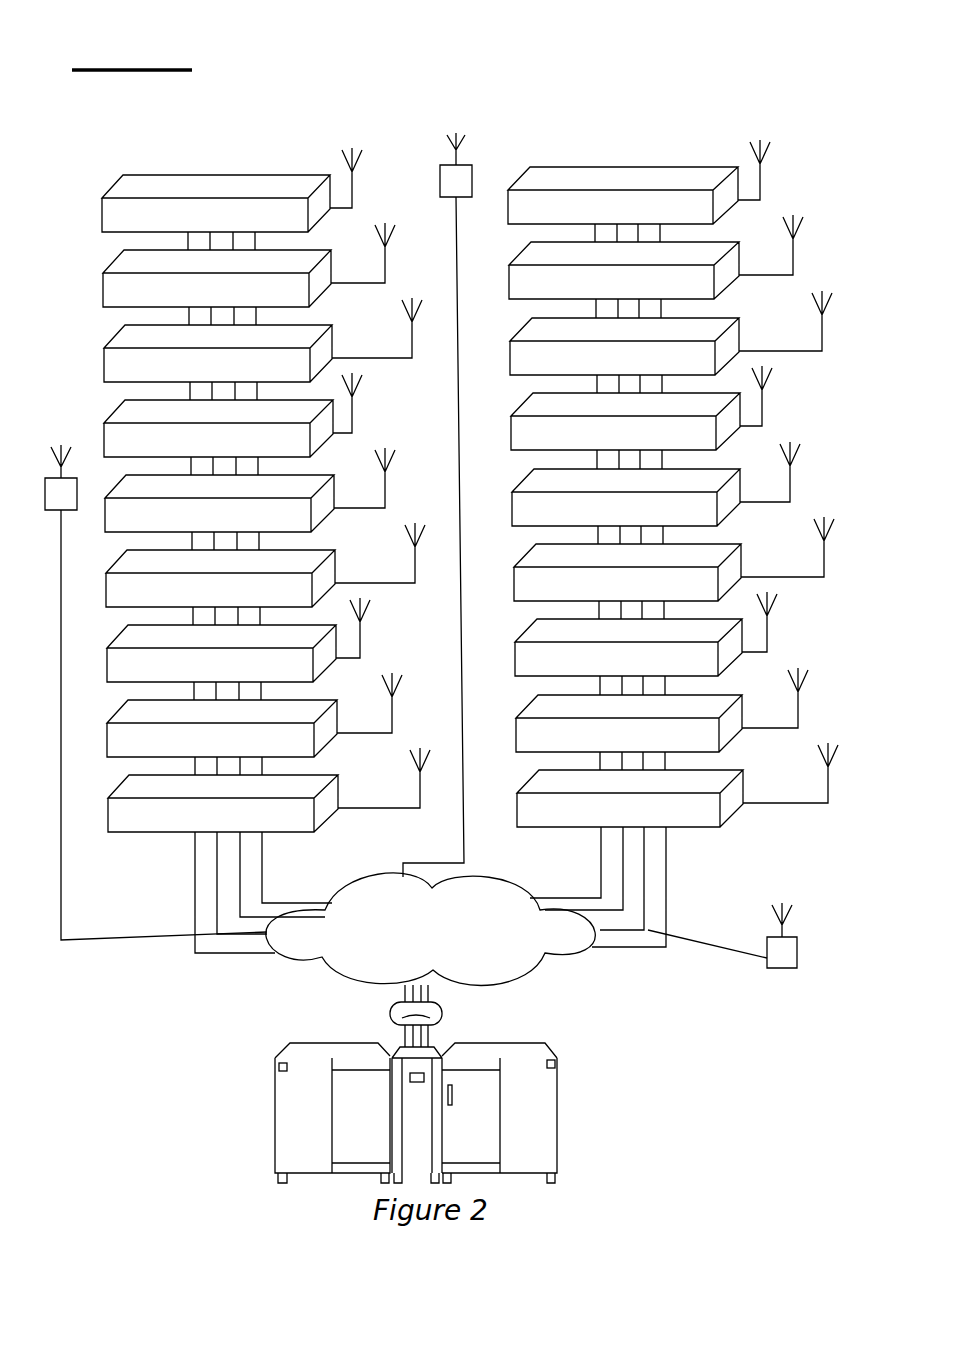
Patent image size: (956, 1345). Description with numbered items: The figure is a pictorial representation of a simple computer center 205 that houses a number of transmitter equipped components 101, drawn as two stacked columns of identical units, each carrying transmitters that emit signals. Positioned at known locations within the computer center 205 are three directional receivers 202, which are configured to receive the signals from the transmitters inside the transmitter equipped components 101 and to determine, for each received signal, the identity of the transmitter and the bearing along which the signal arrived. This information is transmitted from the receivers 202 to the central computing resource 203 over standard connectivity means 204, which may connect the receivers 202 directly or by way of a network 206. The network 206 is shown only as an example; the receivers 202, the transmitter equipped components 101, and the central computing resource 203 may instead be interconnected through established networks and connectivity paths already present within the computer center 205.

The transmitter equipped component 101 is at (650, 128).
The directional receiver 202 is at (455, 125).
The central computing resource 203 is at (558, 1117).
The connectivity means 204 is at (464, 808).
The computer center 205 is at (137, 70).
The network 206 is at (430, 929).